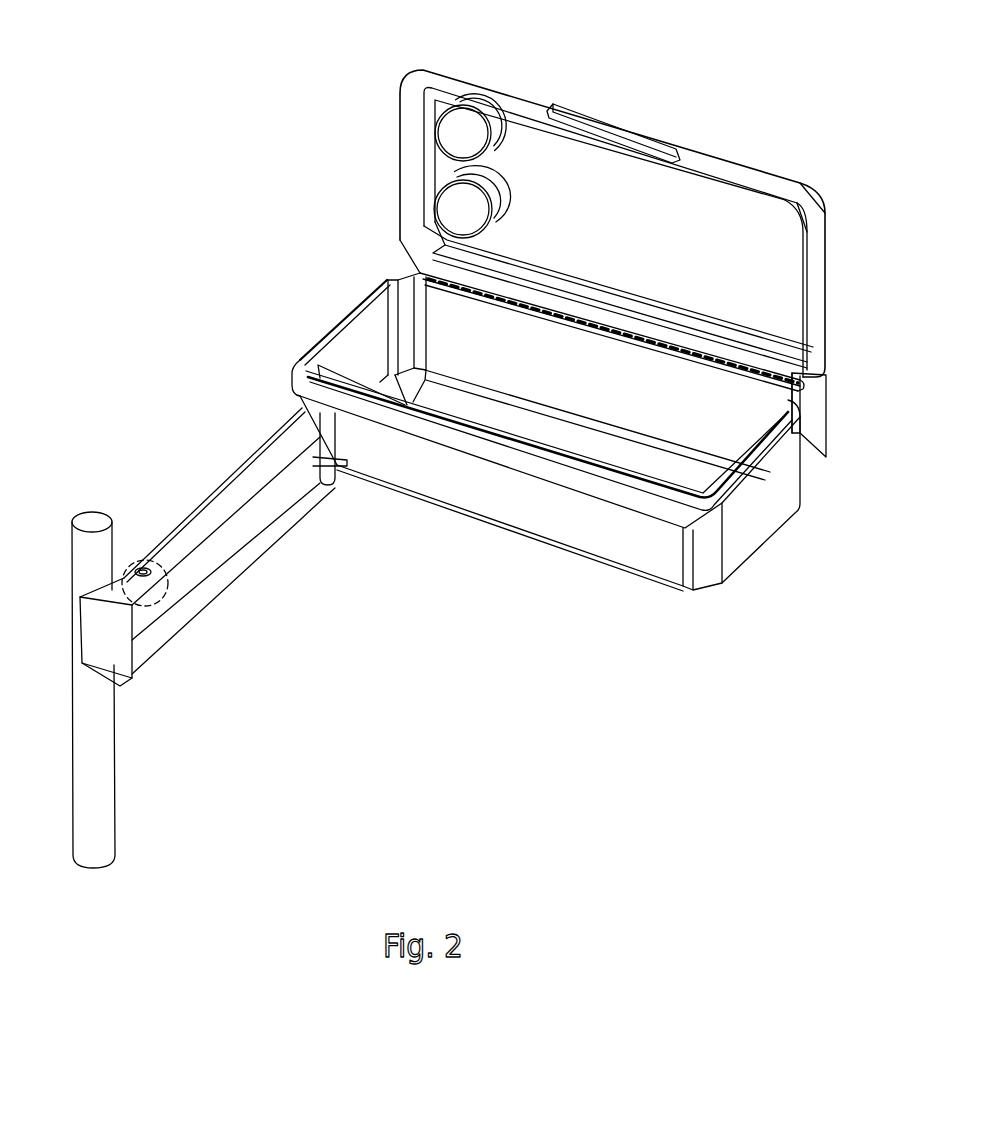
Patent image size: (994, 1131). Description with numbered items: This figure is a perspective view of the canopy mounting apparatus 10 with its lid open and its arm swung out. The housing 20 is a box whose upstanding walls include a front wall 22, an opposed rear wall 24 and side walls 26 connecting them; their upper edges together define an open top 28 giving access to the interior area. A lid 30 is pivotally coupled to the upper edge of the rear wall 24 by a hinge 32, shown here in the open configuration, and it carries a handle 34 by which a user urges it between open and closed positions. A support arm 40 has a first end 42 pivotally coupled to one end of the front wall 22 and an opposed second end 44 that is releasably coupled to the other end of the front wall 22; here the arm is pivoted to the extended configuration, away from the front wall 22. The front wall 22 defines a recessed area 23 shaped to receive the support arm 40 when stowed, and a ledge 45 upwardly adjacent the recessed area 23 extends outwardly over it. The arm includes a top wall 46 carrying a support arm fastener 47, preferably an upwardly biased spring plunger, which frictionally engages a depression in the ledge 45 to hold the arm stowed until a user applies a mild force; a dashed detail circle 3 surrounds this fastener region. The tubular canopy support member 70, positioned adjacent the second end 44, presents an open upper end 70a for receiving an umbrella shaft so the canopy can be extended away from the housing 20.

The canopy mounting apparatus 10 is at (153, 136).
The housing 20 is at (765, 582).
The front wall 22 is at (630, 540).
The recessed area 23 is at (445, 482).
The rear wall 24 is at (440, 310).
The side walls 26 is at (767, 513).
The open top 28 is at (340, 323).
The lid 30 is at (472, 62).
The hinge 32 is at (576, 329).
The handle 34 is at (609, 123).
The support arm 40 is at (195, 477).
The first end 42 is at (320, 508).
The second end 44 is at (108, 658).
The ledge 45 is at (557, 470).
The top wall 46 is at (255, 463).
The support arm fastener 47 is at (143, 565).
The canopy support member 70 is at (105, 803).
The open upper end 70a is at (90, 510).
The FIG. 3 detail region 3 is at (172, 593).